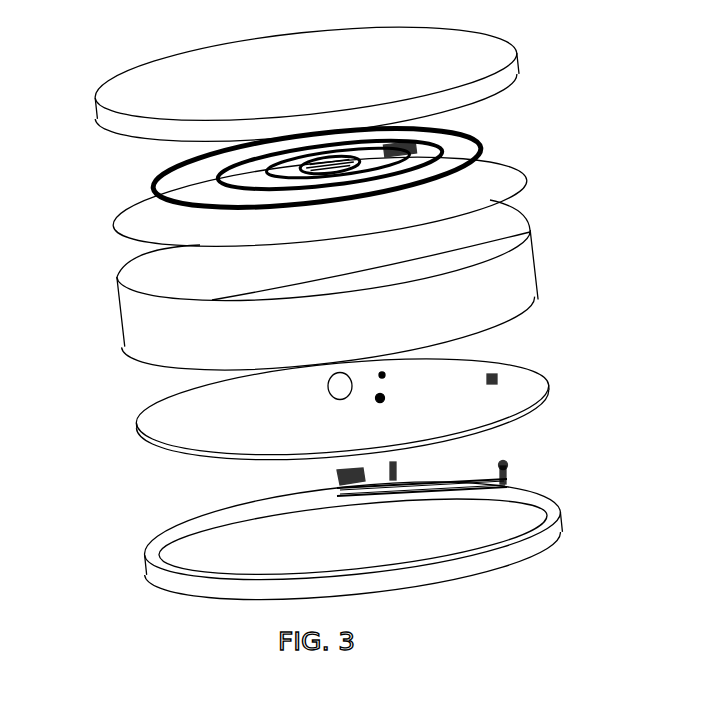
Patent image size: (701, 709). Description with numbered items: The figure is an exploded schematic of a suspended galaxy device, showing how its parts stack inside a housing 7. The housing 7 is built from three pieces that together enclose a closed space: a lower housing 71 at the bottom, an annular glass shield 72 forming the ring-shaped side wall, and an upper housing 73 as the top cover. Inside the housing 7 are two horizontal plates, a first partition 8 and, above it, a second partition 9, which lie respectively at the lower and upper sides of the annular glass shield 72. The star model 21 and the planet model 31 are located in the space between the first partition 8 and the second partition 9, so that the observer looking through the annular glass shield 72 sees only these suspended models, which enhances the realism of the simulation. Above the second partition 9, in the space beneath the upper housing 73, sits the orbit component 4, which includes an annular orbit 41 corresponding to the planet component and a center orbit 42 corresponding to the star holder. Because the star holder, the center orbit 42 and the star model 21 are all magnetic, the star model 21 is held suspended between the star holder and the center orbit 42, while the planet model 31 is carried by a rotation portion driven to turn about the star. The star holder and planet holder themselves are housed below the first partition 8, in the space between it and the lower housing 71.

The upper housing 73 is at (145, 107).
The housing 7 is at (158, 337).
The annular glass shield 72 is at (140, 307).
The lower housing 71 is at (230, 543).
The orbit component 4 is at (387, 144).
The annular orbit 41 is at (466, 173).
The center orbit 42 is at (300, 167).
The second partition 9 is at (142, 223).
The first partition 8 is at (193, 438).
The star model 21 is at (353, 382).
The planet model 31 is at (495, 378).